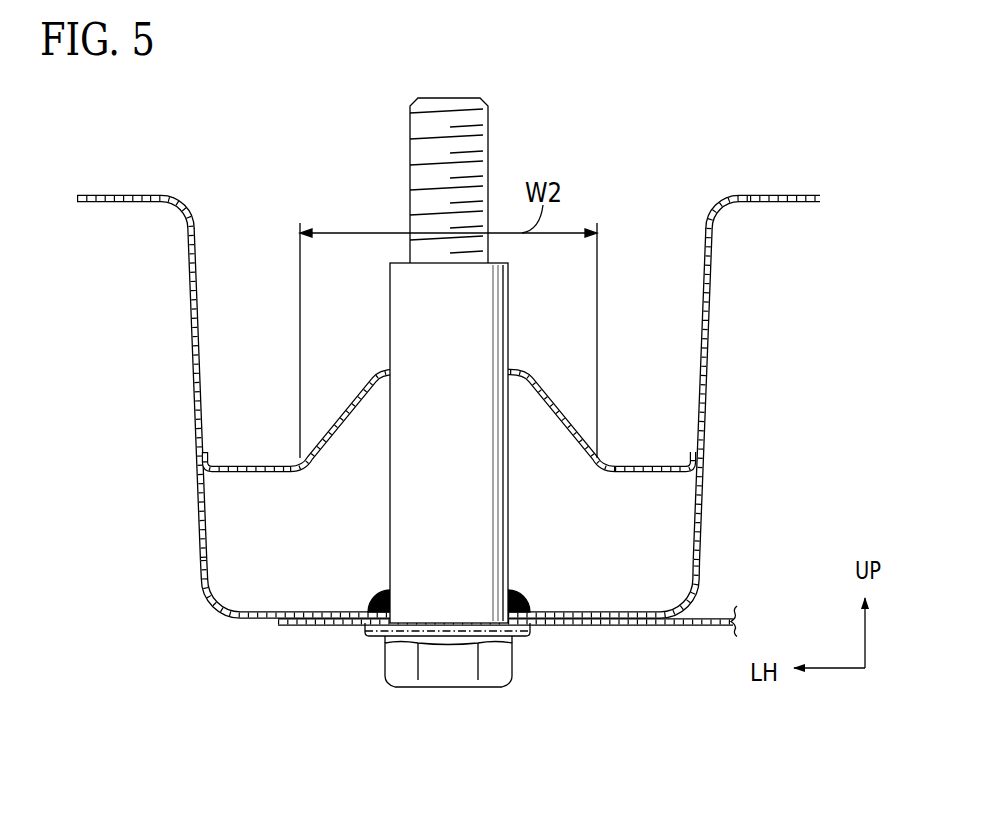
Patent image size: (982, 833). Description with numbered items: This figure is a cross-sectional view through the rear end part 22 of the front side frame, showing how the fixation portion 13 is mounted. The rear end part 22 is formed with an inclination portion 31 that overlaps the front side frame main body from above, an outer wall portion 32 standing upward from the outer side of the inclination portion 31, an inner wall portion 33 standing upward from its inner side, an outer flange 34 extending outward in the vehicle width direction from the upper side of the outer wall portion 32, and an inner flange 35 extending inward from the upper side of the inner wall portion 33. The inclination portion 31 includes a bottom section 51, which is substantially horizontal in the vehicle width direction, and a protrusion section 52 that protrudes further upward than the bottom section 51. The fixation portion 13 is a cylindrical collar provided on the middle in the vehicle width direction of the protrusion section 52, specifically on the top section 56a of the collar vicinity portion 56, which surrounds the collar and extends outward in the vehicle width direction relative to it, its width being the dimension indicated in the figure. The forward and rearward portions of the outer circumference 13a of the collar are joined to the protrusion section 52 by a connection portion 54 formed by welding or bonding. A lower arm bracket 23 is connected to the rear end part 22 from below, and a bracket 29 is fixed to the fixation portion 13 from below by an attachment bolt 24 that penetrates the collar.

The fixation portion 13 is at (586, 432).
The outer circumference 13a is at (468, 282).
The rear end part 22 is at (450, 350).
The lower arm bracket 23 is at (197, 530).
The attachment bolt 24 is at (512, 660).
The bracket 29 is at (680, 626).
The inclination portion 31 is at (566, 405).
The outer wall portion 32 is at (185, 282).
The inner wall portion 33 is at (714, 297).
The outer flange 34 is at (112, 194).
The inner flange 35 is at (786, 194).
The bottom section 51 is at (260, 465).
The protrusion section 52 is at (430, 366).
The connection portion 54 is at (443, 355).
The collar vicinity portion 56 is at (333, 414).
The top section 56a is at (427, 355).